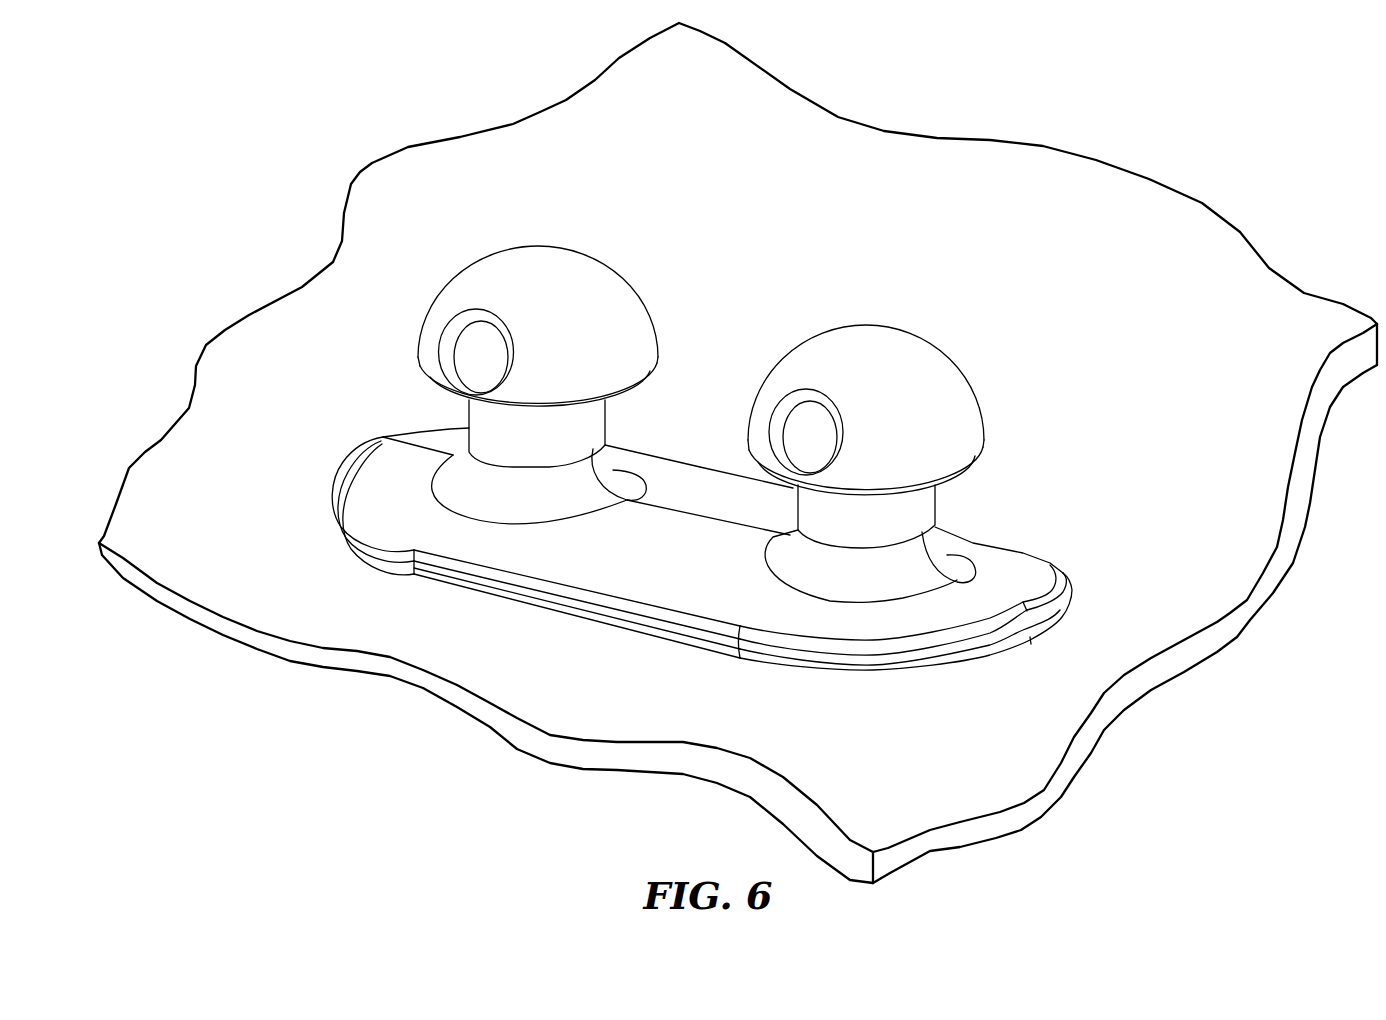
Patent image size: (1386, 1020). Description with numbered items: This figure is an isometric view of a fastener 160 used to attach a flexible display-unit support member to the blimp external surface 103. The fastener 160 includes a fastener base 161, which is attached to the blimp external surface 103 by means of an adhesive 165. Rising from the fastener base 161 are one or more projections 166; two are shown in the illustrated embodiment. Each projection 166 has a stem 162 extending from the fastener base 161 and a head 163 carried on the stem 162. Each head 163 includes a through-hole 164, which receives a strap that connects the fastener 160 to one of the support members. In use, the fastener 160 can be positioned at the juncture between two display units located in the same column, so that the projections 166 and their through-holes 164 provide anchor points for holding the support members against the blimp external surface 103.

The blimp external surface 103 is at (1175, 223).
The fastener 160 is at (290, 222).
The fastener base 161 is at (658, 612).
The stem 162 is at (485, 427).
The head 163 is at (549, 262).
The through-hole 164 is at (478, 340).
The adhesive 165 is at (963, 663).
The projection 166 is at (632, 381).